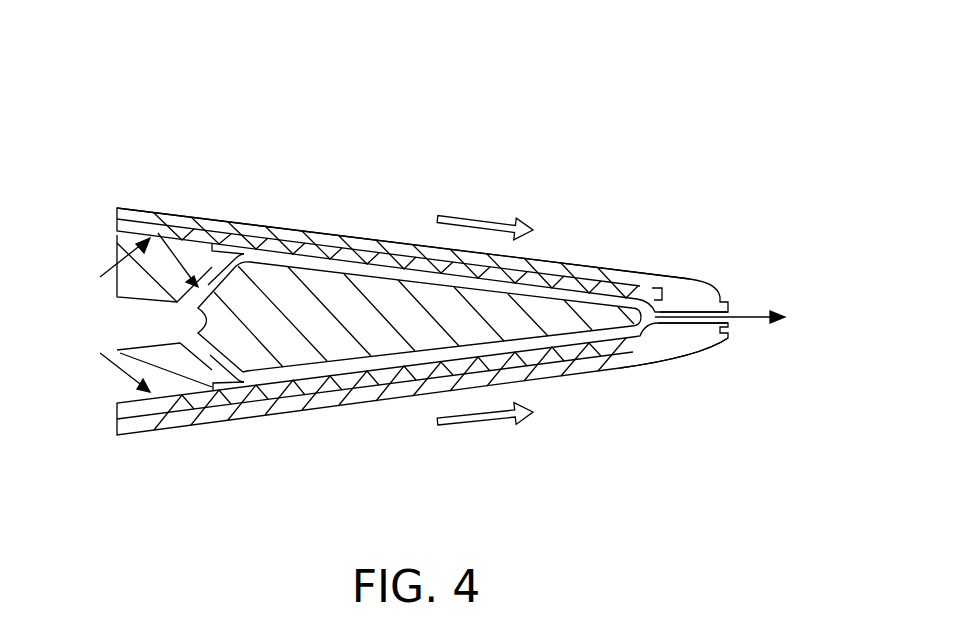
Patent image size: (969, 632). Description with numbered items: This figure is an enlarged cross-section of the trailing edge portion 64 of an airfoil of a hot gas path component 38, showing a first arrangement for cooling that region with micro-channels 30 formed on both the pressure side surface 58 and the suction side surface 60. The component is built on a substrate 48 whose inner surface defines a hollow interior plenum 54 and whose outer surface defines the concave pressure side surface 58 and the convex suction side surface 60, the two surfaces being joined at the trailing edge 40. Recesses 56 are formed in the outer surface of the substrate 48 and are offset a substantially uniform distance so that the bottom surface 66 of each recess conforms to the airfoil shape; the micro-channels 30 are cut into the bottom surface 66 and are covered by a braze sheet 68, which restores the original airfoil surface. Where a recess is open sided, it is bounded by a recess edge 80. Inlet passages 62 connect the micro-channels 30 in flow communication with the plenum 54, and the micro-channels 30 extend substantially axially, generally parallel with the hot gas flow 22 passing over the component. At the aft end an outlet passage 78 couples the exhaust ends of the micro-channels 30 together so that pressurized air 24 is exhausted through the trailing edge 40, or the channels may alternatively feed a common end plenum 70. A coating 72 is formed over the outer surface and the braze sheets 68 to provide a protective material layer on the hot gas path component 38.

The hot gas flow 22 is at (477, 215).
The pressurized air 24 is at (267, 250).
The micro-channels 30 is at (406, 264).
The hot gas path component 38 is at (535, 140).
The trailing edge 40 is at (747, 342).
The substrate 48 is at (361, 330).
The plenum 54 is at (166, 333).
The recesses 56 is at (100, 277).
The pressure side surface 58 is at (340, 418).
The suction side surface 60 is at (292, 172).
The inlet passages 62 is at (158, 233).
The trailing edge portion 64 is at (445, 65).
The bottom surface 66 is at (122, 212).
The braze sheet 68 is at (330, 242).
The end plenum 70 is at (652, 302).
The coating 72 is at (578, 265).
The outlet passage 78 is at (730, 309).
The recess edge 80 is at (645, 334).